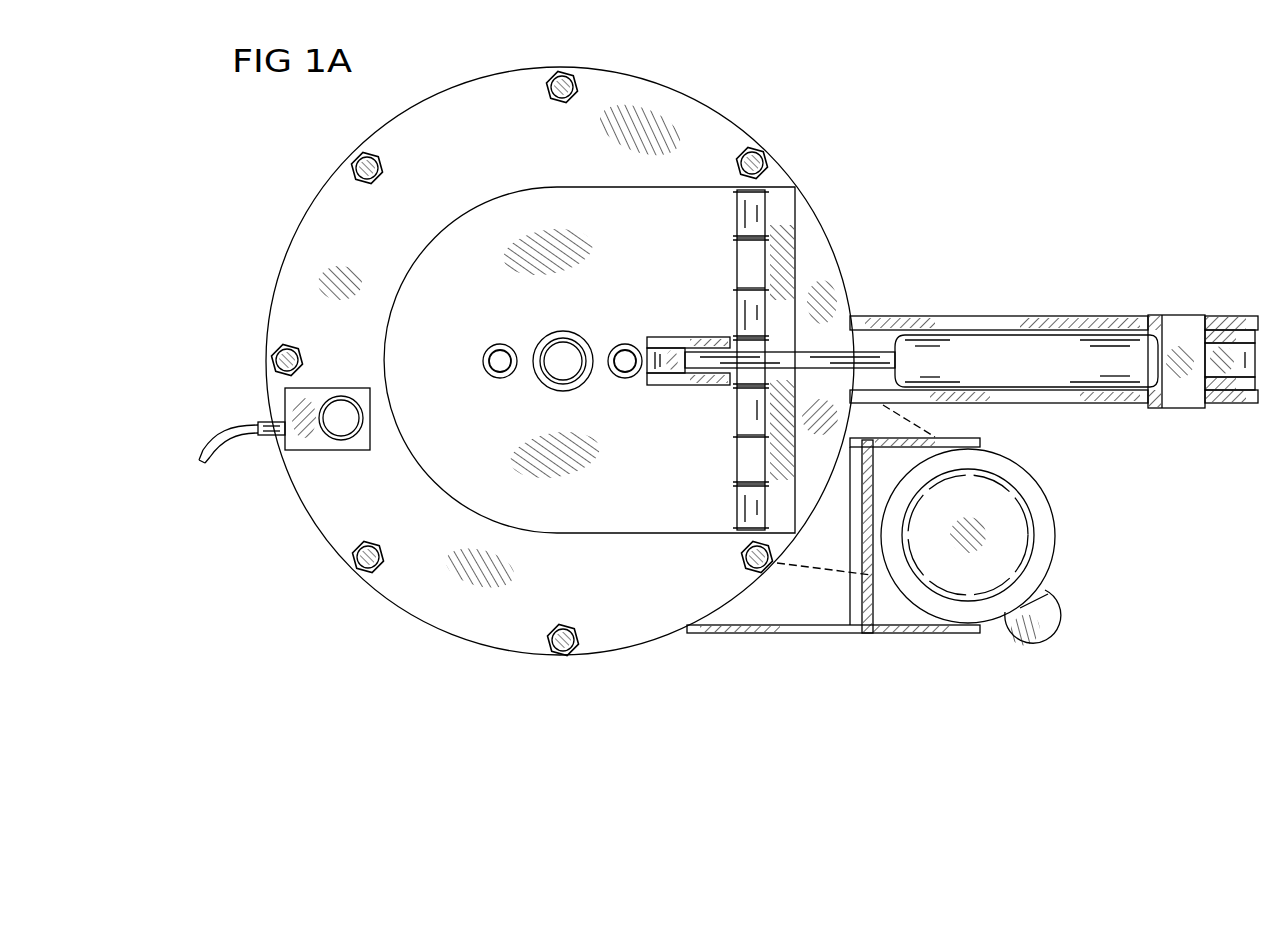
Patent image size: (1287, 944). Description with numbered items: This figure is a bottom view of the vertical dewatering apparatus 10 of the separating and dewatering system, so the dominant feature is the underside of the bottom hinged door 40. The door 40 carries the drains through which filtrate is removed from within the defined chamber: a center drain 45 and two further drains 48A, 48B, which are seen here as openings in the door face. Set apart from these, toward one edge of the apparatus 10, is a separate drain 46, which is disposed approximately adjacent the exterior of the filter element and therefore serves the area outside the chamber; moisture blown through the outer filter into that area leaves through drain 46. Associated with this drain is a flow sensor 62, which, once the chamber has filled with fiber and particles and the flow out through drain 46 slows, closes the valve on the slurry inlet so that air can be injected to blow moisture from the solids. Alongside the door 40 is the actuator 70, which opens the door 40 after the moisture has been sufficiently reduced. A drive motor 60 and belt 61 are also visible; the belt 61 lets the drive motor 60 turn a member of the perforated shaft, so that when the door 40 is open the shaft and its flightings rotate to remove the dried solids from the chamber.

The vertical dewatering apparatus 10 is at (383, 607).
The bottom hinged door 40 is at (680, 510).
The center drain 45 is at (562, 378).
The drain 46 is at (335, 433).
The drain 48A is at (500, 372).
The drain 48B is at (626, 378).
The drive motor 60 is at (1032, 635).
The belt 61 is at (825, 575).
The flow sensor 62 is at (300, 435).
The actuator 70 is at (1048, 377).